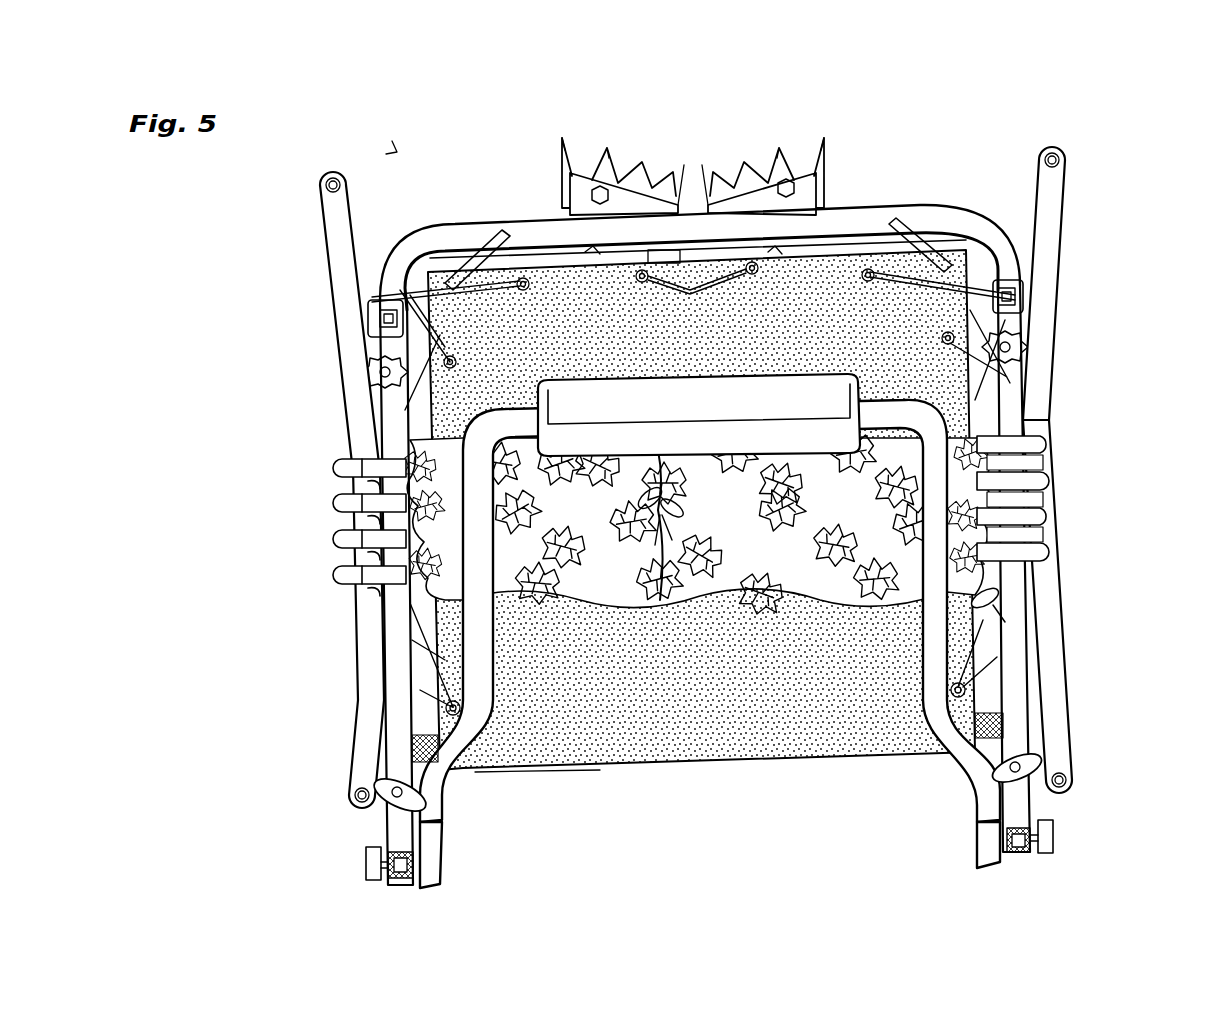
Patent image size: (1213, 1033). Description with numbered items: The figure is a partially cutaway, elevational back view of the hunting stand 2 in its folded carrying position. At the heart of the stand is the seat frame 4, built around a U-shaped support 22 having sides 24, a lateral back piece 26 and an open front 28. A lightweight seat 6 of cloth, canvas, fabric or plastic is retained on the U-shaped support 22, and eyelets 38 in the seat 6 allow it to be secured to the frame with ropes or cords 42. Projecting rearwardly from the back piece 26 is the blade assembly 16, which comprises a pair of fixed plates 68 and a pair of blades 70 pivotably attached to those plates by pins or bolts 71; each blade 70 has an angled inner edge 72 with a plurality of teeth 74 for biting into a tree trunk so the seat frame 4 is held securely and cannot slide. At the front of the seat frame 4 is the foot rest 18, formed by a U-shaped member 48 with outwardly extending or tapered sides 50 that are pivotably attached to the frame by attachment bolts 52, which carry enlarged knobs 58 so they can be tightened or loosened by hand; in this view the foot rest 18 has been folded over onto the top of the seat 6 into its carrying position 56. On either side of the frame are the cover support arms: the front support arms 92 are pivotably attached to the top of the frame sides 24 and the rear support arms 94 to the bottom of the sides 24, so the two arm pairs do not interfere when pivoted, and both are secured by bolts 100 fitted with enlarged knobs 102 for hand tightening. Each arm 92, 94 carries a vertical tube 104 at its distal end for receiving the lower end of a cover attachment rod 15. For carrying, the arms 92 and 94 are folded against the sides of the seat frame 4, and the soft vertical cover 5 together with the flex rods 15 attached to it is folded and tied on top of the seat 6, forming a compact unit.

The hunting stand 2 is at (397, 152).
The seat frame 4 is at (1008, 412).
The vertical cover 5 is at (415, 596).
The seat 6 is at (795, 305).
The cover attachment rods 15 is at (1045, 564).
The blade assembly 16 is at (705, 157).
The foot rest 18 is at (930, 640).
The U-shaped support 22 is at (423, 245).
The sides 24 is at (1013, 372).
The lateral back piece 26 is at (505, 233).
The open front 28 is at (624, 808).
The eyelets 38 is at (953, 337).
The ropes or cords 42 is at (400, 285).
The U-shaped member 48 is at (935, 683).
The sides 50 is at (975, 810).
The attachment bolts 52 is at (1050, 858).
The folded or carrying position 56 is at (425, 415).
The enlarged knobs 58 is at (1055, 830).
The fixed plates 68 is at (706, 205).
The blades 70 is at (822, 165).
The pins or bolts 71 is at (795, 175).
The angled inner edges 72 is at (782, 126).
The teeth 74 is at (824, 150).
The front support arms 92 is at (1048, 273).
The rear support arms 94 is at (1048, 718).
The bolts 100 is at (1030, 760).
The enlarged knobs 102 is at (706, 779).
The vertical tube 104 is at (1070, 783).